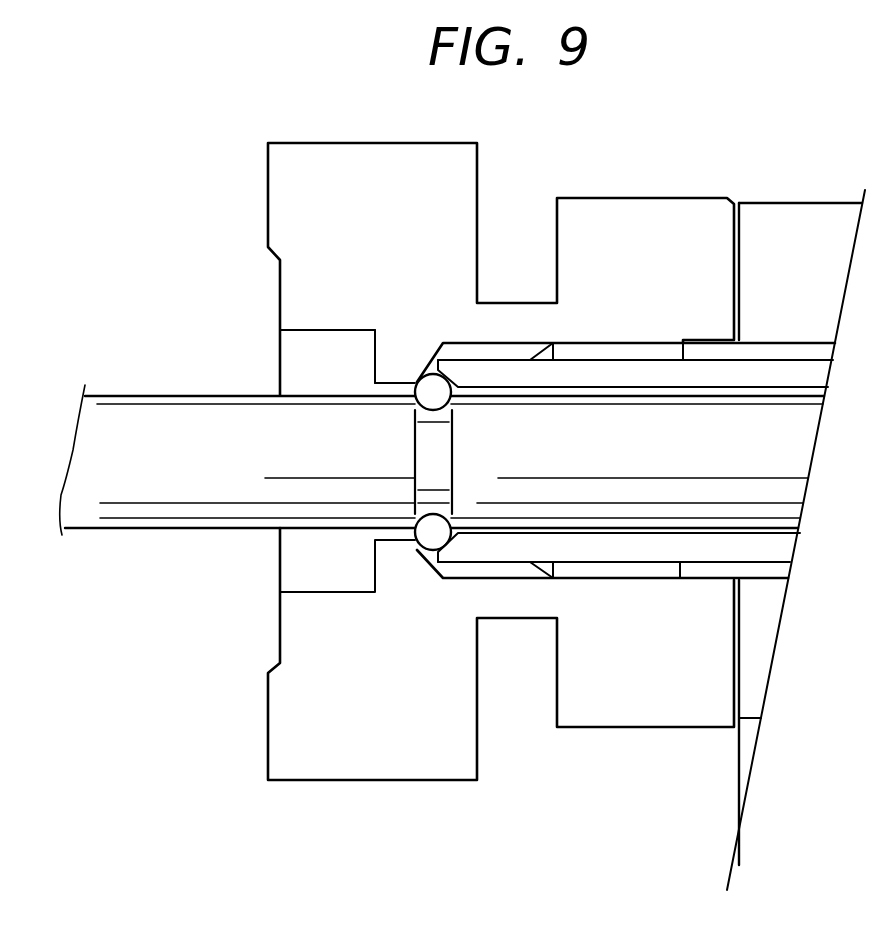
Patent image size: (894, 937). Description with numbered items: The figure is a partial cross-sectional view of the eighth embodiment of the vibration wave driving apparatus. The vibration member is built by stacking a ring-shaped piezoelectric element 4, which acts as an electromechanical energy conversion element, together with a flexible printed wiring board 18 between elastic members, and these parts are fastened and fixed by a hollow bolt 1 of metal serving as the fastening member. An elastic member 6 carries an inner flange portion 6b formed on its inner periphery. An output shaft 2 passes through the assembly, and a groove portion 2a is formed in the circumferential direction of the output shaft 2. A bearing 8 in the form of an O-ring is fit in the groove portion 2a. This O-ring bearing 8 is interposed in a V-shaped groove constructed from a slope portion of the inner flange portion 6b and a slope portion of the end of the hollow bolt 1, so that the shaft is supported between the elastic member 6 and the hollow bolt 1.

The hollow bolt 1 is at (630, 367).
The output shaft 2 is at (157, 532).
The groove portion 2a is at (418, 470).
The piezoelectric element 4 is at (765, 212).
The elastic member 6 is at (333, 772).
The inner flange portion 6b is at (383, 372).
The bearing 8 is at (440, 385).
The flexible printed wiring board 18 is at (733, 806).